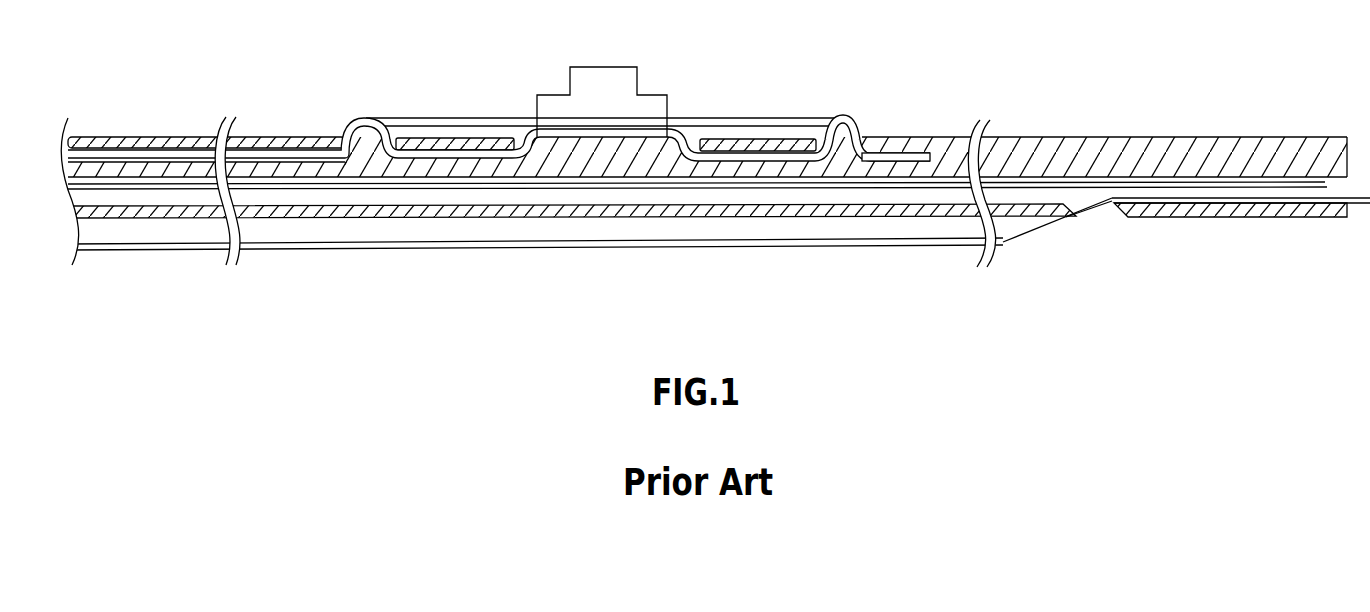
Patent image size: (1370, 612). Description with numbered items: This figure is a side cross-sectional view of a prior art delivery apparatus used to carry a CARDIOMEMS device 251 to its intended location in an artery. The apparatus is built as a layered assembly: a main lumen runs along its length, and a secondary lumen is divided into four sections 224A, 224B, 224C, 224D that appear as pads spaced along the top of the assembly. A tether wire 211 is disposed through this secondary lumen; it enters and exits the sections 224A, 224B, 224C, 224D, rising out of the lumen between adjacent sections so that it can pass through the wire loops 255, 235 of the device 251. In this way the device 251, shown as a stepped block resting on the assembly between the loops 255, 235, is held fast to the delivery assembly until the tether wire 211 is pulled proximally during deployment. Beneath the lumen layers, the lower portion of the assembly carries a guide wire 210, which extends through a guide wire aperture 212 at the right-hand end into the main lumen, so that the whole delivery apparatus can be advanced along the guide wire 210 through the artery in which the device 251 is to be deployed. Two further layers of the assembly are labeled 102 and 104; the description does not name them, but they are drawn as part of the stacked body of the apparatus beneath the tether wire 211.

The substrate 102 is at (890, 198).
The adhesive layer 104 is at (778, 184).
The guide wire 210 is at (408, 250).
The tether wire 211 is at (354, 128).
The guide wire aperture 212 is at (1101, 218).
The secondary lumen section 224A is at (260, 145).
The secondary lumen section 224B is at (462, 147).
The secondary lumen section 224C is at (733, 142).
The secondary lumen section 224D is at (901, 150).
The wire loop 235 is at (782, 117).
The CARDIOMEMS device 251 is at (612, 64).
The wire loop 255 is at (409, 118).